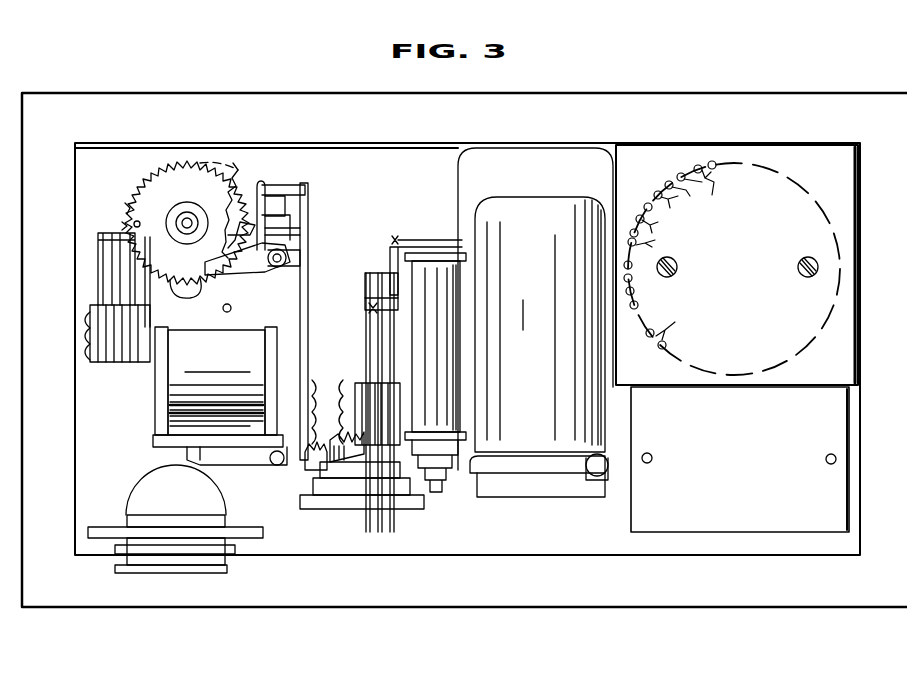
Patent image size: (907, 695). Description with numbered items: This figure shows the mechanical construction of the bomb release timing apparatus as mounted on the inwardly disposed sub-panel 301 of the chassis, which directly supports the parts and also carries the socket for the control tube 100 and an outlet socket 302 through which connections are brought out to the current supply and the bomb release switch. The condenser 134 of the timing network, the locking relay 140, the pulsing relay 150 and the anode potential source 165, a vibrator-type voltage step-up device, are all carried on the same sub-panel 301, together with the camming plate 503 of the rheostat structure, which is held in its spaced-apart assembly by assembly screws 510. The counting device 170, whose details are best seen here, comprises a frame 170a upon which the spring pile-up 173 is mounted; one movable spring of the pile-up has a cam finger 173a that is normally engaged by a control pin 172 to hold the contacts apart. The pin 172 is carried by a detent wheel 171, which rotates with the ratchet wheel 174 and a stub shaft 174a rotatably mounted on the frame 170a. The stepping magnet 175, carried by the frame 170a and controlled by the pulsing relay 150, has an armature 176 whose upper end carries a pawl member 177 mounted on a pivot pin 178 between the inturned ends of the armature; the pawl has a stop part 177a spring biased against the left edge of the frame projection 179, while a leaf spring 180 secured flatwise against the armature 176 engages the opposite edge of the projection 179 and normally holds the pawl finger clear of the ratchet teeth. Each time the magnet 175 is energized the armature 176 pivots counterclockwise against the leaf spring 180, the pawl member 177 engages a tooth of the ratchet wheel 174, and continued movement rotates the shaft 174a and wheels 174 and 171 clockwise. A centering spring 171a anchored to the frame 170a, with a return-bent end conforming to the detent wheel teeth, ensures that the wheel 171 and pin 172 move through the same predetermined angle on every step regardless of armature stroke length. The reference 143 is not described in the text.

The control tube 100 is at (572, 182).
The condenser 134 is at (636, 516).
The locking relay 140 is at (441, 268).
The valve fitting 143 is at (368, 308).
The pulsing relay 150 is at (306, 486).
The anode potential source 165 is at (475, 190).
The presettable counting device 170 is at (234, 164).
The frame 170a is at (227, 313).
The detent wheel 171 is at (156, 183).
The centering spring 171a is at (120, 226).
The control pin 172 is at (126, 207).
The spring pile-up 173 is at (108, 286).
The cam finger 173a is at (127, 220).
The ratchet wheel 174 is at (243, 225).
The stub shaft 174a is at (200, 195).
The stepping magnet 175 is at (166, 406).
The armature 176 is at (306, 342).
The pawl member 177 is at (248, 272).
The stop part 177a is at (290, 232).
The pivot pin 178 is at (290, 258).
The frame projection 179 is at (300, 183).
The leaf spring 180 is at (298, 212).
The sub-panel 301 is at (728, 546).
The outlet socket 302 is at (238, 553).
The camming plate 503 is at (816, 158).
The assembly screws 510 is at (798, 270).